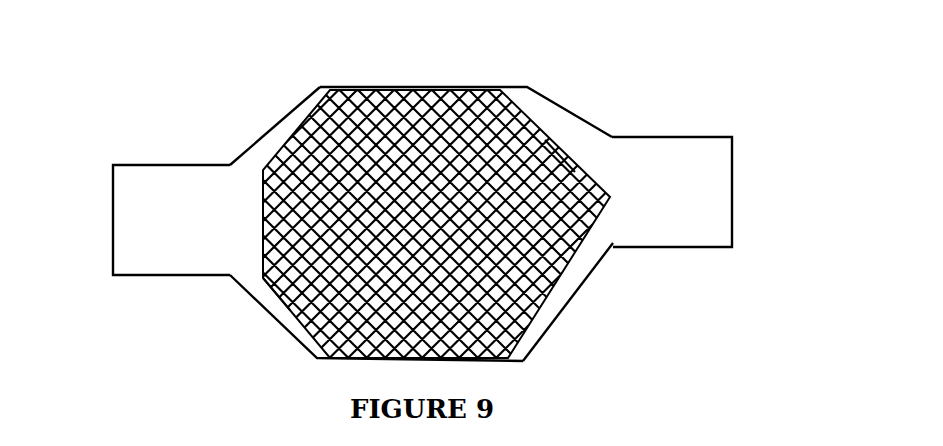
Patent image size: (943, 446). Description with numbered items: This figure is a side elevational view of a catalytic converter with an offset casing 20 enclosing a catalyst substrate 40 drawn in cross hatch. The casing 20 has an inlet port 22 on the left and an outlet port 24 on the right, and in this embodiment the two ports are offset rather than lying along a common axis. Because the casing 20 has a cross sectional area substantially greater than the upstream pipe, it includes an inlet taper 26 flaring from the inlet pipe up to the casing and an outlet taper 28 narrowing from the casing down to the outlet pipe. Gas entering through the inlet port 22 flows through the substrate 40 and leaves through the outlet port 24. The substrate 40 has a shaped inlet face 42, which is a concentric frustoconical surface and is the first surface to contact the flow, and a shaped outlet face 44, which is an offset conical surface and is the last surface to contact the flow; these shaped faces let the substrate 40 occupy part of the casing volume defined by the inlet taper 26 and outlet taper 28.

The casing 20 is at (420, 192).
The inlet port 22 is at (113, 183).
The outlet port 24 is at (735, 140).
The inlet taper 26 is at (283, 118).
The outlet taper 28 is at (578, 287).
The catalyst substrate 40 is at (493, 117).
The inlet face 42 is at (271, 291).
The outlet face 44 is at (568, 146).